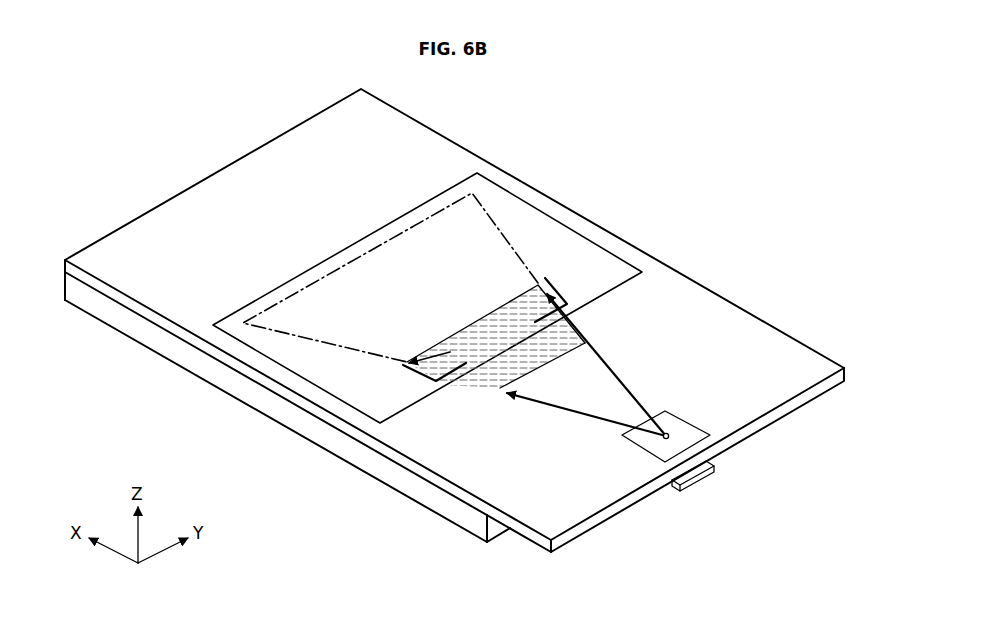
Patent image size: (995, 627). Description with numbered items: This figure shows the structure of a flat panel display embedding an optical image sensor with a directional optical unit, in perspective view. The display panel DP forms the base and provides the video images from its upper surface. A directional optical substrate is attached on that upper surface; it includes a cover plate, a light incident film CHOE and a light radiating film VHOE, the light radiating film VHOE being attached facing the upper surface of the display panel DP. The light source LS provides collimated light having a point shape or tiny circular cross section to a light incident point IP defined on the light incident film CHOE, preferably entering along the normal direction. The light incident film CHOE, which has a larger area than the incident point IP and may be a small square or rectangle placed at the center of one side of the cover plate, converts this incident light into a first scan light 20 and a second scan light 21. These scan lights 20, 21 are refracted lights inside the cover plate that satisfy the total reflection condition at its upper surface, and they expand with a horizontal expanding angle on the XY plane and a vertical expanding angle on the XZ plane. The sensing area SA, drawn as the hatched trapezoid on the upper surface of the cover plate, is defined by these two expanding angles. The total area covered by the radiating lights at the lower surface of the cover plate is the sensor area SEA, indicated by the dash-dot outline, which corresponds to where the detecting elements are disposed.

The display panel DP is at (425, 495).
The light radiating film VHOE is at (233, 340).
The sensor area SEA is at (320, 343).
The sensing area SA is at (430, 348).
The second scan light 21 is at (570, 304).
The first scan light 20 is at (632, 392).
The light incident point IP is at (669, 434).
The light incident film CHOE is at (700, 445).
The light source LS is at (697, 478).